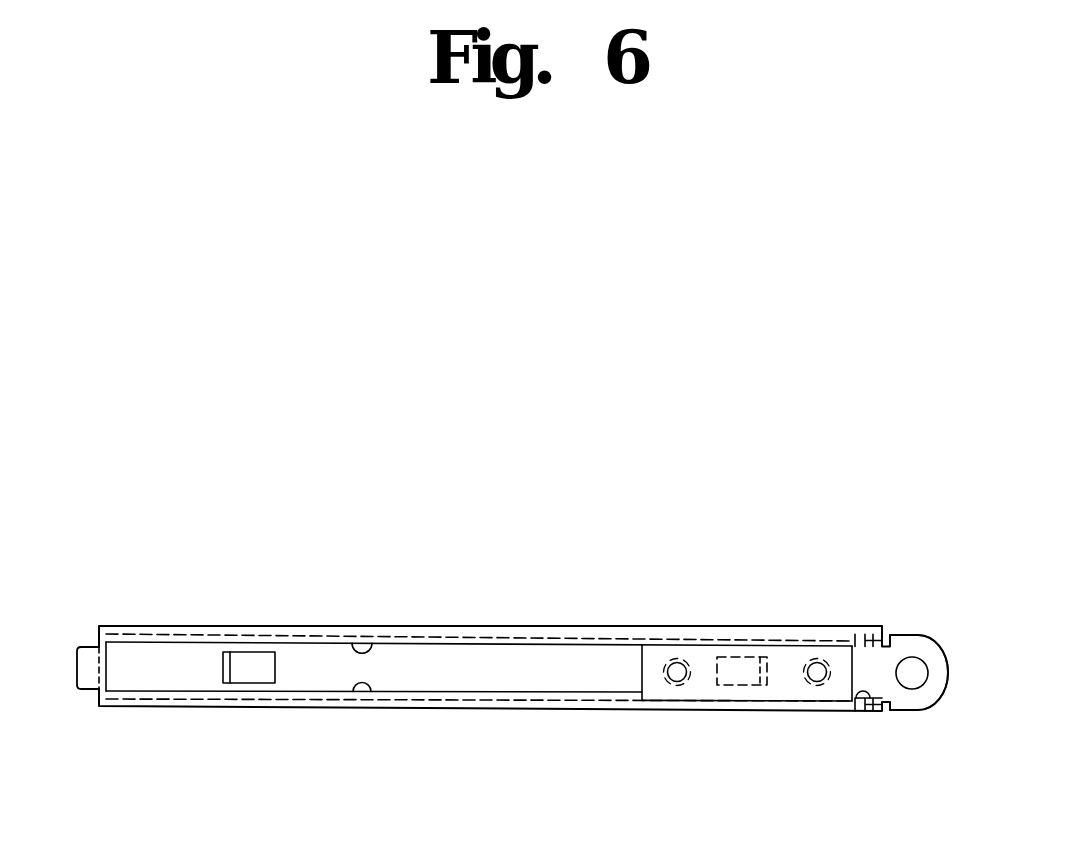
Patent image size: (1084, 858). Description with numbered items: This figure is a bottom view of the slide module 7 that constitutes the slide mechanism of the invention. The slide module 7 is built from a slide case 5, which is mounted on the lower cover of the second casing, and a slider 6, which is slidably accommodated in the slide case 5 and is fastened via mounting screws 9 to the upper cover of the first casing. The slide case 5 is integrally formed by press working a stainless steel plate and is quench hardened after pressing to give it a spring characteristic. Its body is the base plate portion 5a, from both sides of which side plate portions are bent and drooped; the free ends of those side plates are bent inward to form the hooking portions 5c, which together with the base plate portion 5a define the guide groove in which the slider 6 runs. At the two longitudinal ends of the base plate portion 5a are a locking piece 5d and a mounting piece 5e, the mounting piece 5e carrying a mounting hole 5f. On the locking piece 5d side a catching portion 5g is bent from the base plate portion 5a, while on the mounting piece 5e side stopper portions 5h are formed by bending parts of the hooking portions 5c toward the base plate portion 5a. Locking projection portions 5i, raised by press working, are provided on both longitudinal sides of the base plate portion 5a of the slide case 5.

The slide case 5 is at (478, 716).
The base plate portion 5a is at (425, 668).
The hooking portions 5c is at (352, 640).
The locking piece 5d is at (87, 690).
The mounting piece 5e is at (912, 711).
The mounting hole 5f is at (920, 661).
The catching portion 5g is at (107, 668).
The stopper portions 5h is at (877, 634).
The locking projection portions 5i is at (223, 683).
The slider 6 is at (783, 662).
The slide module 7 is at (576, 611).
The mounting screws 9 is at (680, 676).